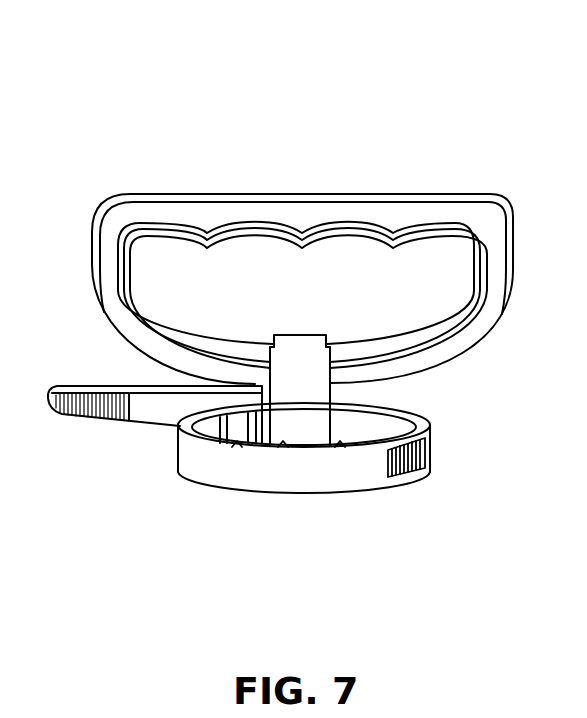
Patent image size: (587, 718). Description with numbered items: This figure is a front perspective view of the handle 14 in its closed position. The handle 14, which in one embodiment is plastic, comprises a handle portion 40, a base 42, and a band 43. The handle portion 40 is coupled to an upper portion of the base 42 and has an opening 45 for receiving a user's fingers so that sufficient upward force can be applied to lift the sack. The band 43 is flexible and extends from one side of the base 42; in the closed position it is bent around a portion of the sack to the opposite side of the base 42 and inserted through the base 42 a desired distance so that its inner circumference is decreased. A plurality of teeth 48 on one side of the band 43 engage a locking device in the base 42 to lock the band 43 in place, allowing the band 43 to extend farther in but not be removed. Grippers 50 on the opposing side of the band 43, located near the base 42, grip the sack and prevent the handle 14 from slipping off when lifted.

The handle 14 is at (400, 110).
The handle portion 40 is at (293, 213).
The opening 45 is at (316, 300).
The base 42 is at (313, 427).
The band 43 is at (150, 408).
The teeth 48 is at (428, 450).
The grippers 50 is at (340, 447).